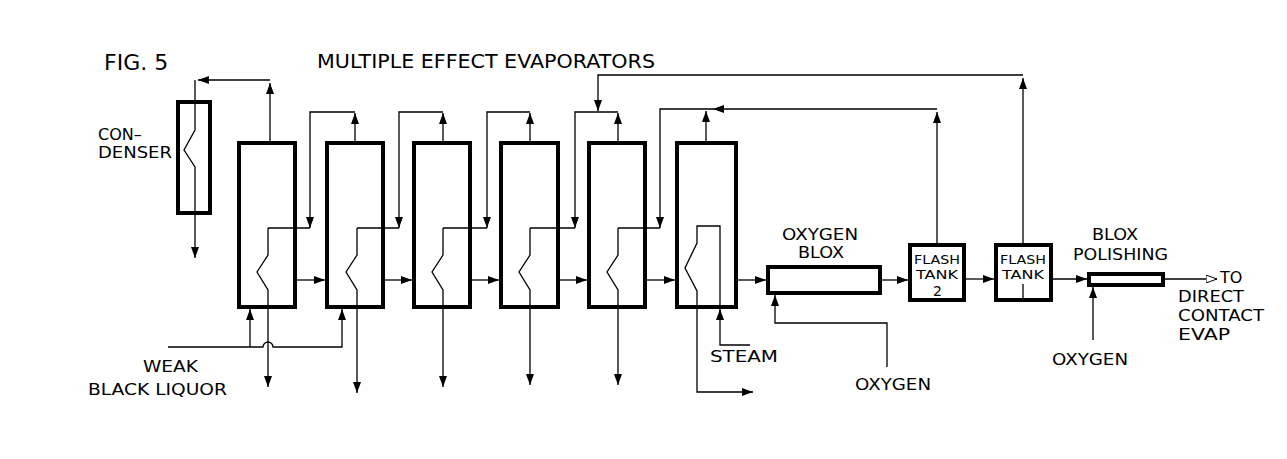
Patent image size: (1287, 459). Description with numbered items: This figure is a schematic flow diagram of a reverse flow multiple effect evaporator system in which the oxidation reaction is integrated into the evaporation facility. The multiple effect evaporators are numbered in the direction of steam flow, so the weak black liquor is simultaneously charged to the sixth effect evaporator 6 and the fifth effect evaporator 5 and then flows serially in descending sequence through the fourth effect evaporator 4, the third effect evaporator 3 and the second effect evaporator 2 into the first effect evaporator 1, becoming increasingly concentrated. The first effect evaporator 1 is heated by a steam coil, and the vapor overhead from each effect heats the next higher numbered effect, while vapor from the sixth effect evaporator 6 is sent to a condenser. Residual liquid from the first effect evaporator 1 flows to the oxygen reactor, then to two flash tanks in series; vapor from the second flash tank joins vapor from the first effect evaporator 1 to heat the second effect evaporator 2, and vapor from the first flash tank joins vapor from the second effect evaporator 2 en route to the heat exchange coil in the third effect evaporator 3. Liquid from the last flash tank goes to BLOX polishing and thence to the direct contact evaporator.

The first effect evaporator 1 is at (715, 267).
The second effect evaporator 2 is at (617, 264).
The third effect evaporator 3 is at (529, 264).
The fourth effect evaporator 4 is at (442, 265).
The fifth effect evaporator 5 is at (355, 268).
The sixth effect evaporator 6 is at (267, 265).